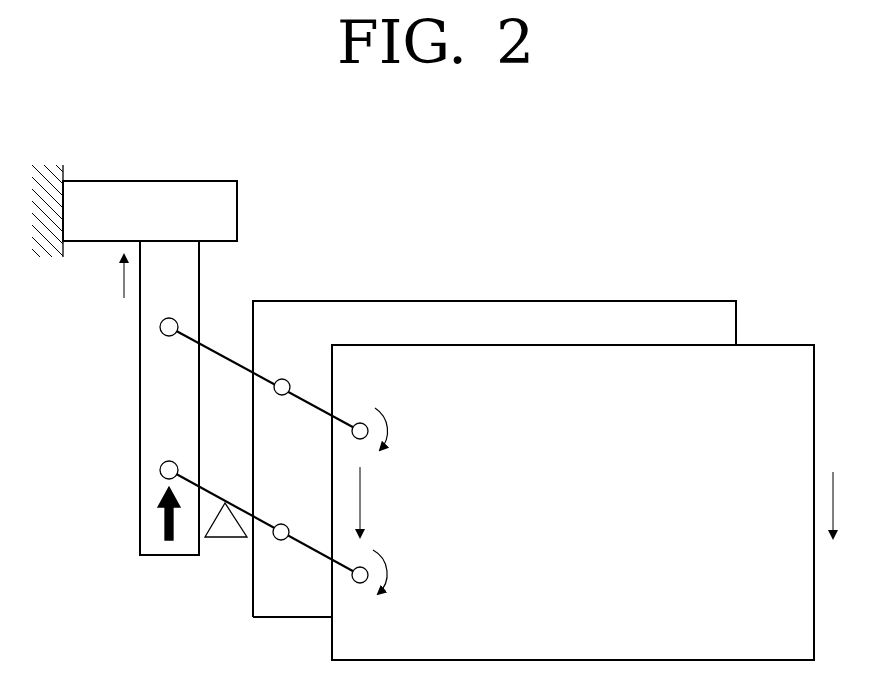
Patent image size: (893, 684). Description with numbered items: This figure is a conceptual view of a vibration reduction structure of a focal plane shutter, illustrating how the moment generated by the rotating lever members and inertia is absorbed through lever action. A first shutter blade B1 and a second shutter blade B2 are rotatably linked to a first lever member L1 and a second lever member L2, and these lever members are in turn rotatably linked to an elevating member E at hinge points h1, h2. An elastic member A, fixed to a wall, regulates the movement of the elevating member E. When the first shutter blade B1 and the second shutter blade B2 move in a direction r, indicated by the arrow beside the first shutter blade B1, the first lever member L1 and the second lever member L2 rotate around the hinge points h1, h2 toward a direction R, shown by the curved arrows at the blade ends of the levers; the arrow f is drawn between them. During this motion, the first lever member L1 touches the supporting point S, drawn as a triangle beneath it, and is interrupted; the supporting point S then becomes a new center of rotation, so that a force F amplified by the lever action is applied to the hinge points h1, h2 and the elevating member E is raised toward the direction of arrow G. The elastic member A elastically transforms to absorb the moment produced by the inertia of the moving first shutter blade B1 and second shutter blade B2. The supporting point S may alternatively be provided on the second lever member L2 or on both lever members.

The elastic member A is at (157, 188).
The elevating member E is at (148, 406).
The direction of arrow G is at (112, 276).
The force F is at (165, 513).
The first lever member L1 is at (305, 548).
The second lever member L2 is at (307, 398).
The hinge point h1 is at (160, 470).
The hinge point h2 is at (160, 327).
The supporting point S is at (224, 540).
The first shutter blade B1 is at (772, 353).
The second shutter blade B2 is at (690, 312).
The direction R is at (379, 501).
The force direction f is at (367, 502).
The direction r is at (841, 505).